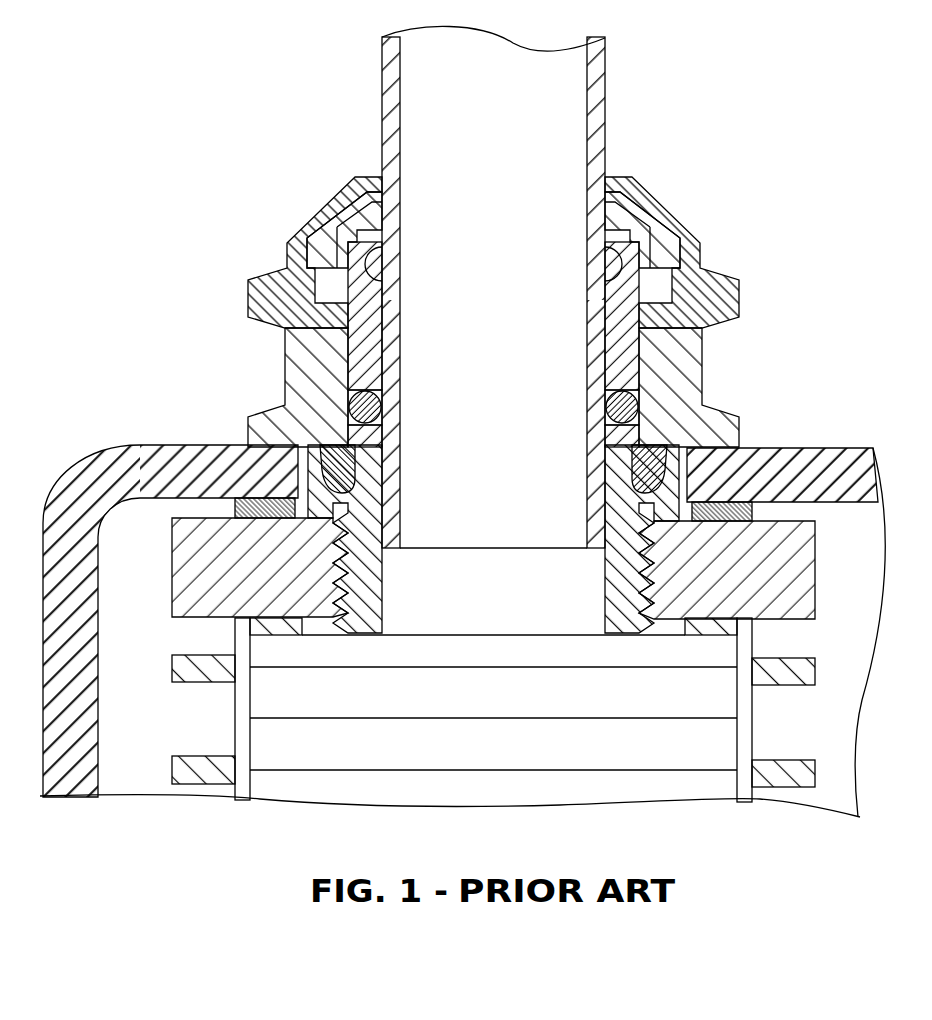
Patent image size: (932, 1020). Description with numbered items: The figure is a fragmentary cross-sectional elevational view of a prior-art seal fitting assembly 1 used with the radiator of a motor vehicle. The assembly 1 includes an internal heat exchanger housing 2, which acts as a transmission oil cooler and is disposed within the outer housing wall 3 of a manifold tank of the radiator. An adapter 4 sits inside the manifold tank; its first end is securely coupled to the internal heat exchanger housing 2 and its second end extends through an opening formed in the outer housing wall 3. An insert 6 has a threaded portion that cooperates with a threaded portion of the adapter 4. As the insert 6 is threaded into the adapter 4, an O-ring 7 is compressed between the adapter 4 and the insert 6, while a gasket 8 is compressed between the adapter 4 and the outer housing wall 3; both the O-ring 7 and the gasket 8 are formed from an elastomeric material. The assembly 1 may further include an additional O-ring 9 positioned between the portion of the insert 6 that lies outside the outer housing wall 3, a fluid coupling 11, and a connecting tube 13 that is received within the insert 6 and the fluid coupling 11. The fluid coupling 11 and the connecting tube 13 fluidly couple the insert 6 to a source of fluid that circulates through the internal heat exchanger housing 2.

The seal fitting assembly 1 is at (700, 175).
The internal heat exchanger housing 2 is at (817, 663).
The outer housing wall 3 is at (765, 447).
The adapter 4 is at (203, 518).
The insert 6 is at (248, 437).
The O-ring 7 is at (670, 447).
The gasket 8 is at (770, 500).
The additional O-ring 9 is at (346, 447).
The fluid coupling 11 is at (350, 270).
The connecting tube 13 is at (382, 137).